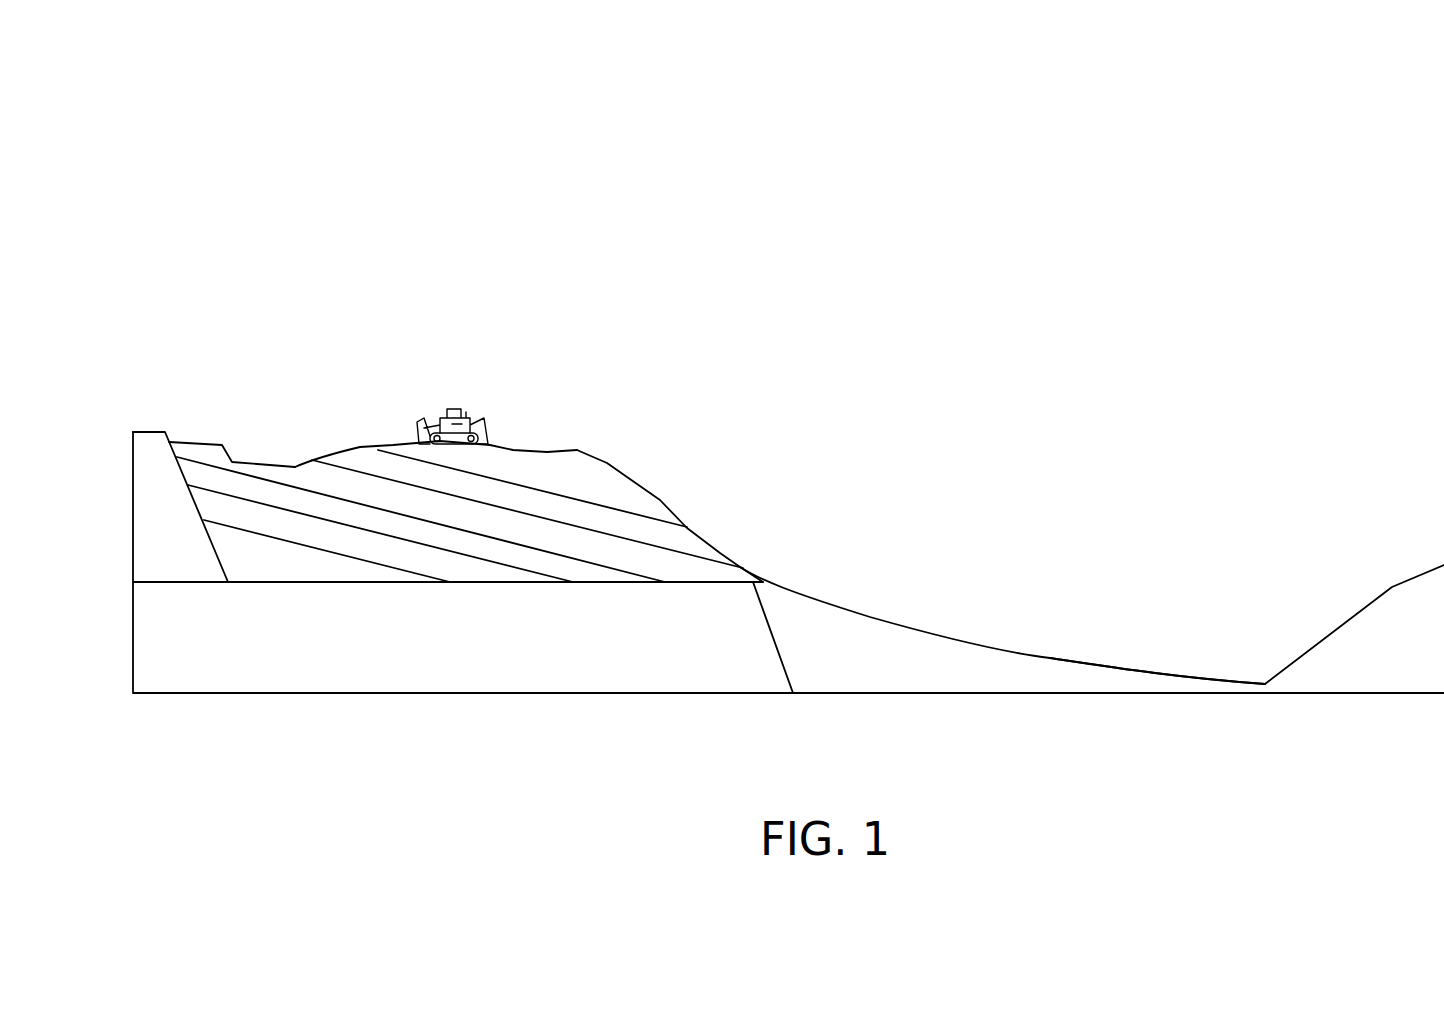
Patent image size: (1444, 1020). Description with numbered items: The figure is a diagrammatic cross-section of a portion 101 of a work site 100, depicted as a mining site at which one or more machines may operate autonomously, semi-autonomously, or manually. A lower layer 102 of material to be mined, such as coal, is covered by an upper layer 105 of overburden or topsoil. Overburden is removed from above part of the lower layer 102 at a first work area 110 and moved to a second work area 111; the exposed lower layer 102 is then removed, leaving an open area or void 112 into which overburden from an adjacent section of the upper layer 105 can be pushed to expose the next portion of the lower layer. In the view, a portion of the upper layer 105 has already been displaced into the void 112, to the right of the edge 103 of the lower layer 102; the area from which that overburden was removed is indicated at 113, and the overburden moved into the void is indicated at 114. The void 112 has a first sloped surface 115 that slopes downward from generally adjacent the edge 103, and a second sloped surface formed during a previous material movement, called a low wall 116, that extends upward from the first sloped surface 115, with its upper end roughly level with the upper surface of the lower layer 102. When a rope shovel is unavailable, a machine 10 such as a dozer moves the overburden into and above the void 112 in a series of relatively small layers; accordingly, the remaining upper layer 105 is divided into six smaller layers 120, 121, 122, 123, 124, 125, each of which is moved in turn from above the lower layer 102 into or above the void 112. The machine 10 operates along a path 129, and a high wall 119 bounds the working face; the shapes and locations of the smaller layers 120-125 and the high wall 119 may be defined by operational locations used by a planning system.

The work site 100 is at (1228, 177).
The portion of a work site 101 is at (1250, 300).
The lower layer 102 is at (493, 642).
The edge of the lower layer 103 is at (770, 623).
The upper layer 105 is at (375, 447).
The machine 10 is at (447, 397).
The first work area 110 is at (603, 420).
The second work area 111 is at (1130, 388).
The void 112 is at (1198, 477).
The area from which overburden has been removed 113 is at (677, 453).
The overburden moved into the void 114 is at (857, 660).
The first sloped surface 115 is at (963, 642).
The low wall 116 is at (1352, 627).
The high wall 119 is at (218, 552).
The smaller layer 120 is at (513, 460).
The smaller layer 121 is at (357, 460).
The smaller layer 122 is at (325, 478).
The smaller layer 123 is at (257, 488).
The smaller layer 124 is at (225, 510).
The smaller layer 125 is at (255, 557).
The path 129 is at (552, 408).